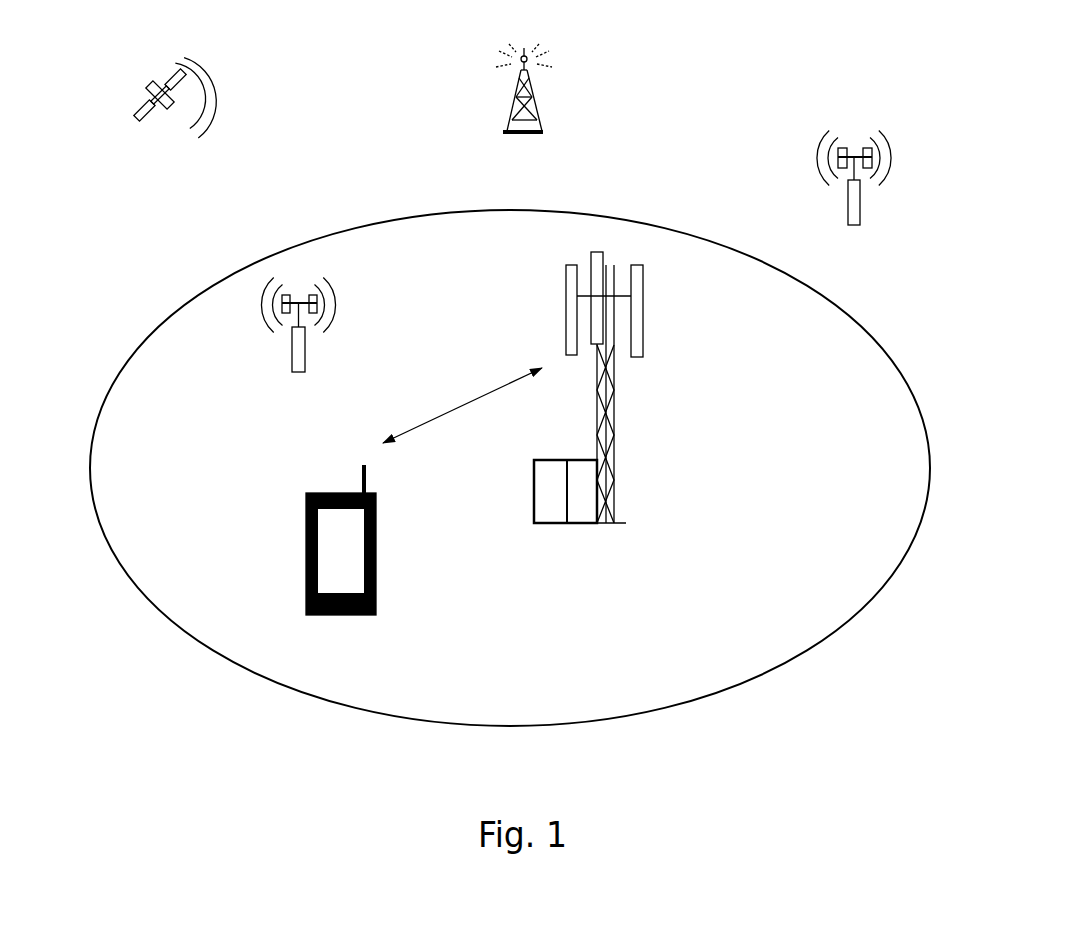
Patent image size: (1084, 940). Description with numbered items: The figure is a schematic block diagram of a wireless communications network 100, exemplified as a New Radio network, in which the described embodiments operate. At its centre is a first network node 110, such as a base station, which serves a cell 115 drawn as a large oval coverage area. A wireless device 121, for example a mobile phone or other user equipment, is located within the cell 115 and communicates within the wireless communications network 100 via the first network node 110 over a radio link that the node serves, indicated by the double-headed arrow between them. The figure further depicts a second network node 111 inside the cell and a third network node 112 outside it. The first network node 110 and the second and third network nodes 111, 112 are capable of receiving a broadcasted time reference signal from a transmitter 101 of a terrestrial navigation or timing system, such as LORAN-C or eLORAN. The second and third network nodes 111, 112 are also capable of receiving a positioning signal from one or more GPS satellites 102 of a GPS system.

The wireless communications network 100 is at (721, 746).
The transmitter 101 is at (537, 100).
The GPS satellite 102 is at (140, 117).
The first network node 110 is at (609, 482).
The second network node 111 is at (291, 348).
The third network node 112 is at (847, 203).
The cell 115 is at (312, 697).
The wireless device 121 is at (305, 513).